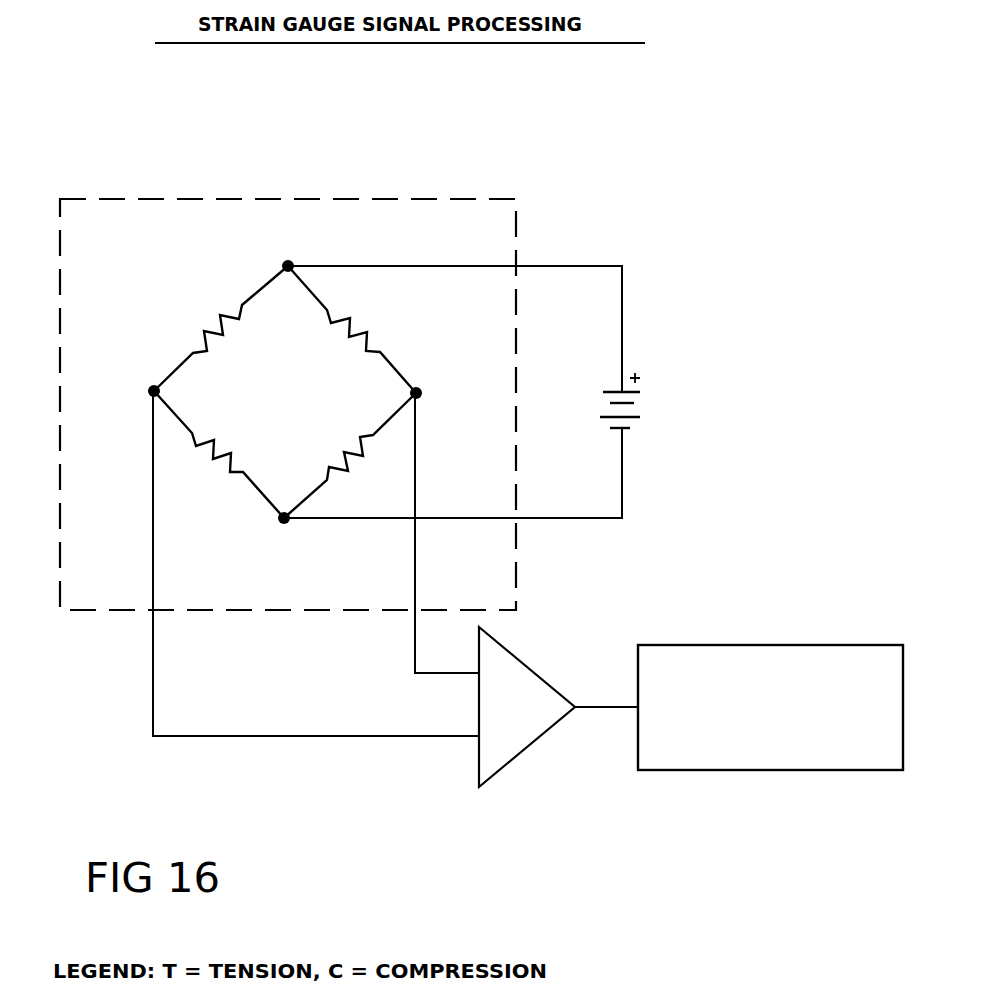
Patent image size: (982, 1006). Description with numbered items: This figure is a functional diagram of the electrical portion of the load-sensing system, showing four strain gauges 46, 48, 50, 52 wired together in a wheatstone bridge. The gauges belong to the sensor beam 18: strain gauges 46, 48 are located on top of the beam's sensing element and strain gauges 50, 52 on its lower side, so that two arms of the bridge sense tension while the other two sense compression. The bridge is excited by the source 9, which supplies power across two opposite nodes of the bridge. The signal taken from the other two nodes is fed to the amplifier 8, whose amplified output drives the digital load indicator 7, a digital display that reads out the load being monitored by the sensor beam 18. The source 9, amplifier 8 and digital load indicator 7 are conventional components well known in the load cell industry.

The digital load indicator 7 is at (675, 644).
The amplifier 8 is at (510, 765).
The source 9 is at (648, 412).
The sensor beam 18 is at (288, 404).
The strain gauge 46 is at (218, 477).
The strain gauge 48 is at (368, 324).
The strain gauge 50 is at (227, 320).
The strain gauge 52 is at (353, 473).